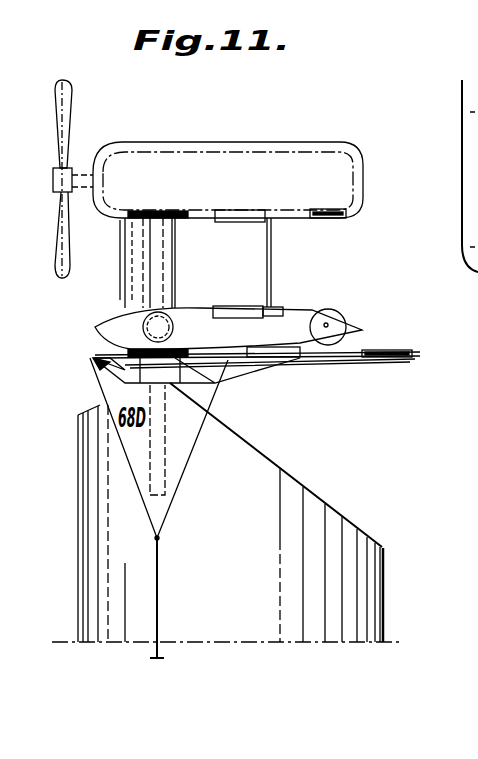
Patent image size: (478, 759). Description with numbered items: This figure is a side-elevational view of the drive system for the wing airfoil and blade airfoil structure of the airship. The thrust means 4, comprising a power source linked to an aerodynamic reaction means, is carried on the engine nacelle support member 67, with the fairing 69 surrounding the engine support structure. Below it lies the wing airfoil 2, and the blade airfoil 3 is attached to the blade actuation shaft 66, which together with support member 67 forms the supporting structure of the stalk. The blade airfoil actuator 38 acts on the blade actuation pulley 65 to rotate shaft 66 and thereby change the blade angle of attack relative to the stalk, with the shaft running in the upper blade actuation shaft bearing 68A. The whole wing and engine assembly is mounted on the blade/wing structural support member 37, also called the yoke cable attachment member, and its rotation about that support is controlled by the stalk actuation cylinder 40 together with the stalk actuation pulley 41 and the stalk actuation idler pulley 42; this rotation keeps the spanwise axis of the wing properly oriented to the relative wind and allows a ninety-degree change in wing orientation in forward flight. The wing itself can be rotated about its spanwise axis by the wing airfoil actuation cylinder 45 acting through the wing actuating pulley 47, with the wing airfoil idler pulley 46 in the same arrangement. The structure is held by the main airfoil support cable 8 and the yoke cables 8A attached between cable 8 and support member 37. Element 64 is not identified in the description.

The wing airfoil 2 is at (100, 325).
The blade airfoil 3 is at (100, 468).
The thrust means 4 is at (232, 148).
The main airfoil support cable 8 is at (159, 592).
The yoke cable 8A is at (130, 478).
The blade/wing structural support member 37 is at (97, 366).
The blade airfoil actuator 38 is at (256, 222).
The stalk actuation cylinder 40 is at (273, 360).
The stalk actuation pulley 41 is at (110, 352).
The stalk actuation idler pulley 42 is at (400, 352).
The wing airfoil actuation cylinder 45 is at (245, 306).
The wing airfoil idler pulley 46 is at (334, 312).
The wing actuating pulley 47 is at (176, 312).
The bracket plate 64 is at (336, 197).
The blade actuation pulley 65 is at (135, 212).
The blade actuation shaft 66 is at (150, 262).
The engine nacelle support member 67 is at (150, 292).
The upper blade actuation shaft bearing 68A is at (124, 232).
The fairing 69 is at (270, 262).